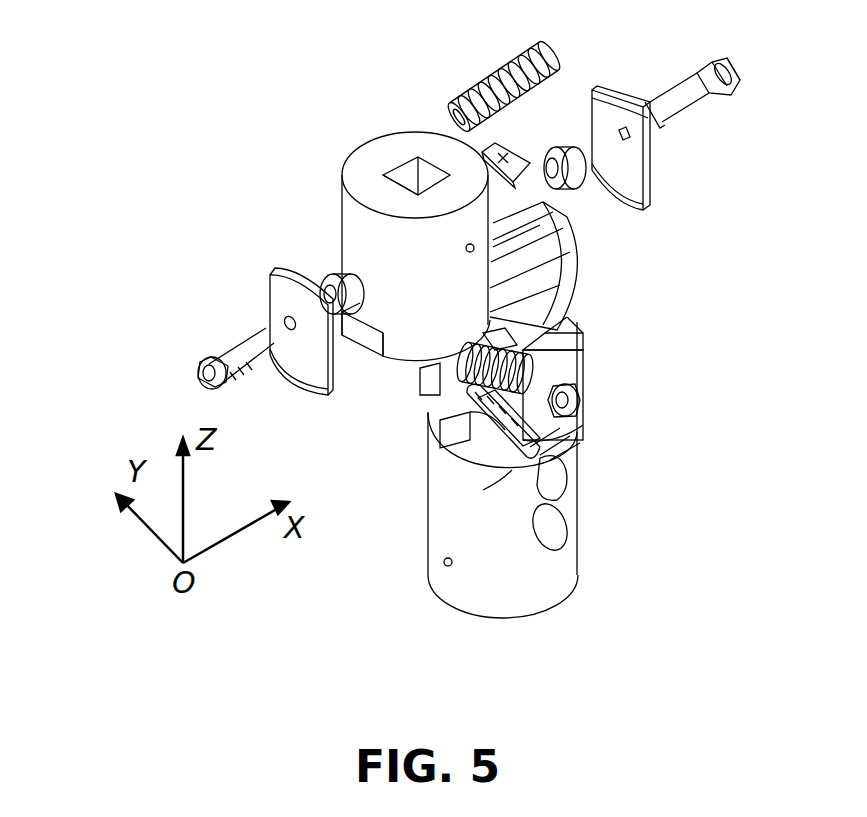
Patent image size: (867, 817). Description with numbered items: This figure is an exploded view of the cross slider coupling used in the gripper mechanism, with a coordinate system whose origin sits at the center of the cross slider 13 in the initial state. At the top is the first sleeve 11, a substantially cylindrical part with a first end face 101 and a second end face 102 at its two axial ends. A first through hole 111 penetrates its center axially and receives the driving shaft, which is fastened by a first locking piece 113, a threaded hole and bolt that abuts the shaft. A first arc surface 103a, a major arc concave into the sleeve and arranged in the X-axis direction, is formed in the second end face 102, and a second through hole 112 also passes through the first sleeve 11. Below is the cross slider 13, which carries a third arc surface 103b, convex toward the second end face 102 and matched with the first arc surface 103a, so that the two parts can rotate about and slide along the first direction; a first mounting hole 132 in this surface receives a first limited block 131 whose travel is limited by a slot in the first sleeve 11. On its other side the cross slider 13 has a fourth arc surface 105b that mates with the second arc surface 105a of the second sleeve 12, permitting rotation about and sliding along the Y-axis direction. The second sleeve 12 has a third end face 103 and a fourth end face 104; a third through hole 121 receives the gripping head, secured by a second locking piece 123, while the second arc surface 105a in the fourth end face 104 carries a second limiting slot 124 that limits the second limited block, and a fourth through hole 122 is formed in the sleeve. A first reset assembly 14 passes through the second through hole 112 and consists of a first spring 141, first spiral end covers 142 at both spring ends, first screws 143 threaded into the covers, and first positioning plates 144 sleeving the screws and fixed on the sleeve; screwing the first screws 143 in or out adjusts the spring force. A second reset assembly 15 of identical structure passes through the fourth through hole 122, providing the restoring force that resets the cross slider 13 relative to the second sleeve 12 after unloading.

The first sleeve 11 is at (390, 183).
The first end face 101 is at (368, 160).
The first through hole 111 is at (405, 167).
The first locking piece 113 is at (470, 246).
The second through hole 112 is at (381, 331).
The first limited block 131 is at (513, 157).
The first spring 141 is at (473, 87).
The first mounting hole 132 is at (497, 225).
The cross slider 13 is at (581, 266).
The third arc surface 103b is at (530, 238).
The fourth arc surface 105b is at (532, 345).
The second reset assembly 15 is at (558, 372).
The second sleeve 12 is at (528, 474).
The third end face 103 is at (440, 603).
The third through hole 121 is at (530, 455).
The fourth through hole 122 is at (550, 530).
The second locking piece 123 is at (445, 561).
The second arc surface 105a is at (547, 472).
The second limiting slot 124 is at (512, 423).
The fourth end face 104 is at (487, 458).
The second end face 102 is at (400, 362).
The first arc surface 103a is at (383, 330).
The first reset assembly 14 is at (244, 305).
The first positioning plate 144 is at (268, 292).
The first screw 143 is at (247, 360).
The first spiral end cover 142 is at (333, 283).